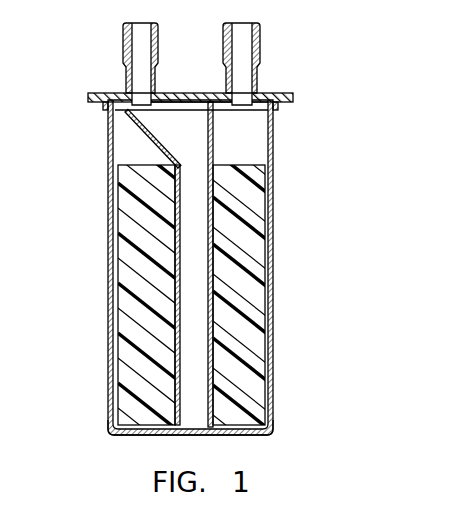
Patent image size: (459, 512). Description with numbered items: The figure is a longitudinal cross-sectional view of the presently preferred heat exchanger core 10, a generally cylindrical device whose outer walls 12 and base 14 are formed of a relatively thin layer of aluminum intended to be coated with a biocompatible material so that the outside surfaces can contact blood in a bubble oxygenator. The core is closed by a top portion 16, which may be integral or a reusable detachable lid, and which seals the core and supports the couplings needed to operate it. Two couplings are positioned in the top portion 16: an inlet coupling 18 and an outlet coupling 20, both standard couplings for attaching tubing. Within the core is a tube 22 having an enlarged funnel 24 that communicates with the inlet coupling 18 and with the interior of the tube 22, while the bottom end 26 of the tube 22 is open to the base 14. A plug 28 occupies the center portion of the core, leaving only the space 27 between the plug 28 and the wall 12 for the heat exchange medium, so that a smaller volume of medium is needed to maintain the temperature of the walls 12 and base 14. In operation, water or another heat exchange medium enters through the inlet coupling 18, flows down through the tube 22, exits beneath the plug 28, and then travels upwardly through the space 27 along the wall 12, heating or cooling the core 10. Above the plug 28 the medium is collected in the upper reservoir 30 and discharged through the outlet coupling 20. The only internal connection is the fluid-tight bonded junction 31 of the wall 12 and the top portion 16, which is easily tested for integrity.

The heat exchanger core 10 is at (352, 236).
The outer walls 12 is at (270, 367).
The base 14 is at (243, 433).
The top portion 16 is at (168, 100).
The inlet coupling 18 is at (155, 25).
The outlet coupling 20 is at (257, 27).
The tube 22 is at (182, 212).
The enlarged funnel 24 is at (153, 127).
The bottom end 26 is at (178, 413).
The space 27 is at (117, 340).
The plug 28 is at (240, 298).
The upper reservoir 30 is at (250, 140).
The junction 31 is at (102, 101).